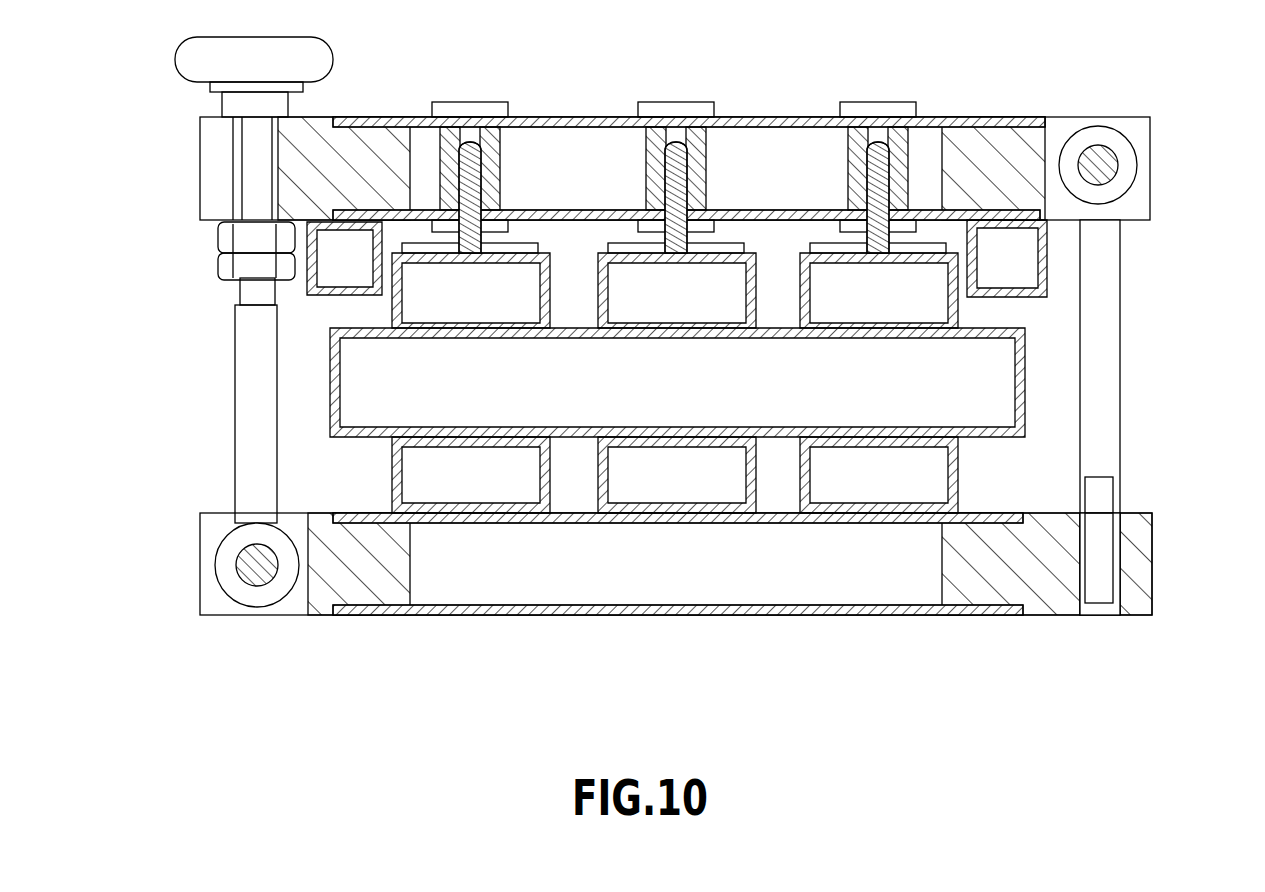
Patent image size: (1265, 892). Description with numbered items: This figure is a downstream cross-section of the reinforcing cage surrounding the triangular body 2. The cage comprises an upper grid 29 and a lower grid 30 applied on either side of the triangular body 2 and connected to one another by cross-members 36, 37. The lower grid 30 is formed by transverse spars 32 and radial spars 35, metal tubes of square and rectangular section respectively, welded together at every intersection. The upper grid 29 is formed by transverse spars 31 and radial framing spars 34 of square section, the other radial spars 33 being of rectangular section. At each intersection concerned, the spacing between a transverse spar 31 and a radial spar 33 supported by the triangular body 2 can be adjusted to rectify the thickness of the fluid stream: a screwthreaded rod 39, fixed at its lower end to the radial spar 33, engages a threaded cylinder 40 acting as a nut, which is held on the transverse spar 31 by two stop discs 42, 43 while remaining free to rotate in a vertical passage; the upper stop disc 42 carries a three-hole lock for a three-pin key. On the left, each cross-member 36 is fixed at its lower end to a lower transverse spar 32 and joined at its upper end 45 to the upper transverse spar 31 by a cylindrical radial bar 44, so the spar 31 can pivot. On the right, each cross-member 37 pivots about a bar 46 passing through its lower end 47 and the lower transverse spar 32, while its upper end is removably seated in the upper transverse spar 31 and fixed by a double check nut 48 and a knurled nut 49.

The triangular body 2 is at (1025, 383).
The upper grid 29 is at (1152, 118).
The lower grid 30 is at (1152, 565).
The transverse spar 31 is at (973, 118).
The transverse spar 32 is at (987, 617).
The radial spar 33 is at (960, 307).
The radial framing spar 34 is at (1018, 257).
The radial spar 35 is at (960, 468).
The cross-member 36 is at (1103, 465).
The cross-member 37 is at (250, 398).
The screwthreaded rod 39 is at (482, 168).
The threaded cylinder 40 is at (500, 137).
The stop disc 42 is at (465, 100).
The stop disc 43 is at (495, 223).
The cylindrical radial bar 44 is at (1083, 157).
The upper end 45 is at (1125, 173).
The bar 46 is at (270, 577).
The lower end 47 is at (225, 562).
The double check nut 48 is at (247, 242).
The knurled nut 49 is at (173, 55).